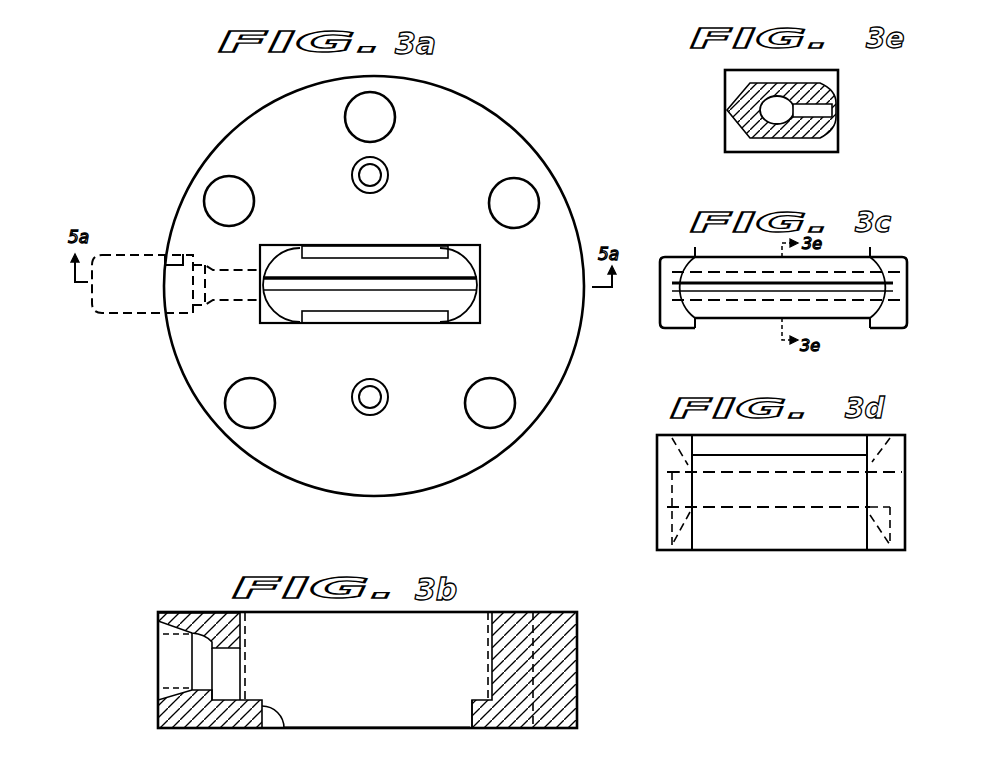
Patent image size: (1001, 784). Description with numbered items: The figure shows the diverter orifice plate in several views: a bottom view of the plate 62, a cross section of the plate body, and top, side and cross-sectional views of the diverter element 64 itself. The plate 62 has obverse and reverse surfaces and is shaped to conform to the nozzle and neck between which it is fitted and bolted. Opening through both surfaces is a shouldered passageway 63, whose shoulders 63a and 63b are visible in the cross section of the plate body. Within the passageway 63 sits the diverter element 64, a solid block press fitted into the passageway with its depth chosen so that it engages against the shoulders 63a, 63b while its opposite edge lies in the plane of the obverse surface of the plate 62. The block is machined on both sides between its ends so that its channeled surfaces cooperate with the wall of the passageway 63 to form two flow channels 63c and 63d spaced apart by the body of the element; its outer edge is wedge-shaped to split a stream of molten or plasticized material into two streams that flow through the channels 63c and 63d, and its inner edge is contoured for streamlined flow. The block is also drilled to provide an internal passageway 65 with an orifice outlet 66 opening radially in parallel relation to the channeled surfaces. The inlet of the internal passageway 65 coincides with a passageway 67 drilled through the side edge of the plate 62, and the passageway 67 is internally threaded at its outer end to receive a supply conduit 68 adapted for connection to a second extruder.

In FIG. 3a, the plate 62 is at (526, 146).
In FIG. 3b, the plate 62 is at (578, 658).
In FIG. 3a, the shouldered passageway 63 is at (348, 255).
In FIG. 3b, the shouldered passageway 63 is at (398, 710).
In FIG. 3b, the passageway shoulder 63a is at (280, 727).
In FIG. 3b, the passageway shoulder 63b is at (470, 704).
In FIG. 3a, the flow channel 63c is at (400, 258).
In FIG. 3a, the flow channel 63d is at (335, 313).
In FIG. 3e, the diverter element 64 is at (848, 143).
In FIG. 3c, the diverter element 64 is at (684, 336).
In FIG. 3d, the diverter element 64 is at (650, 502).
In FIG. 3e, the internal passageway 65 is at (778, 116).
In FIG. 3c, the internal passageway 65 is at (755, 305).
In FIG. 3d, the internal passageway 65 is at (890, 492).
In FIG. 3a, the orifice outlet 66 is at (415, 289).
In FIG. 3e, the orifice outlet 66 is at (831, 112).
In FIG. 3c, the orifice outlet 66 is at (860, 292).
In FIG. 3a, the passageway 67 is at (168, 255).
In FIG. 3a, the supply conduit 68 is at (126, 313).
In FIG. 3b, the supply conduit 68 is at (228, 678).